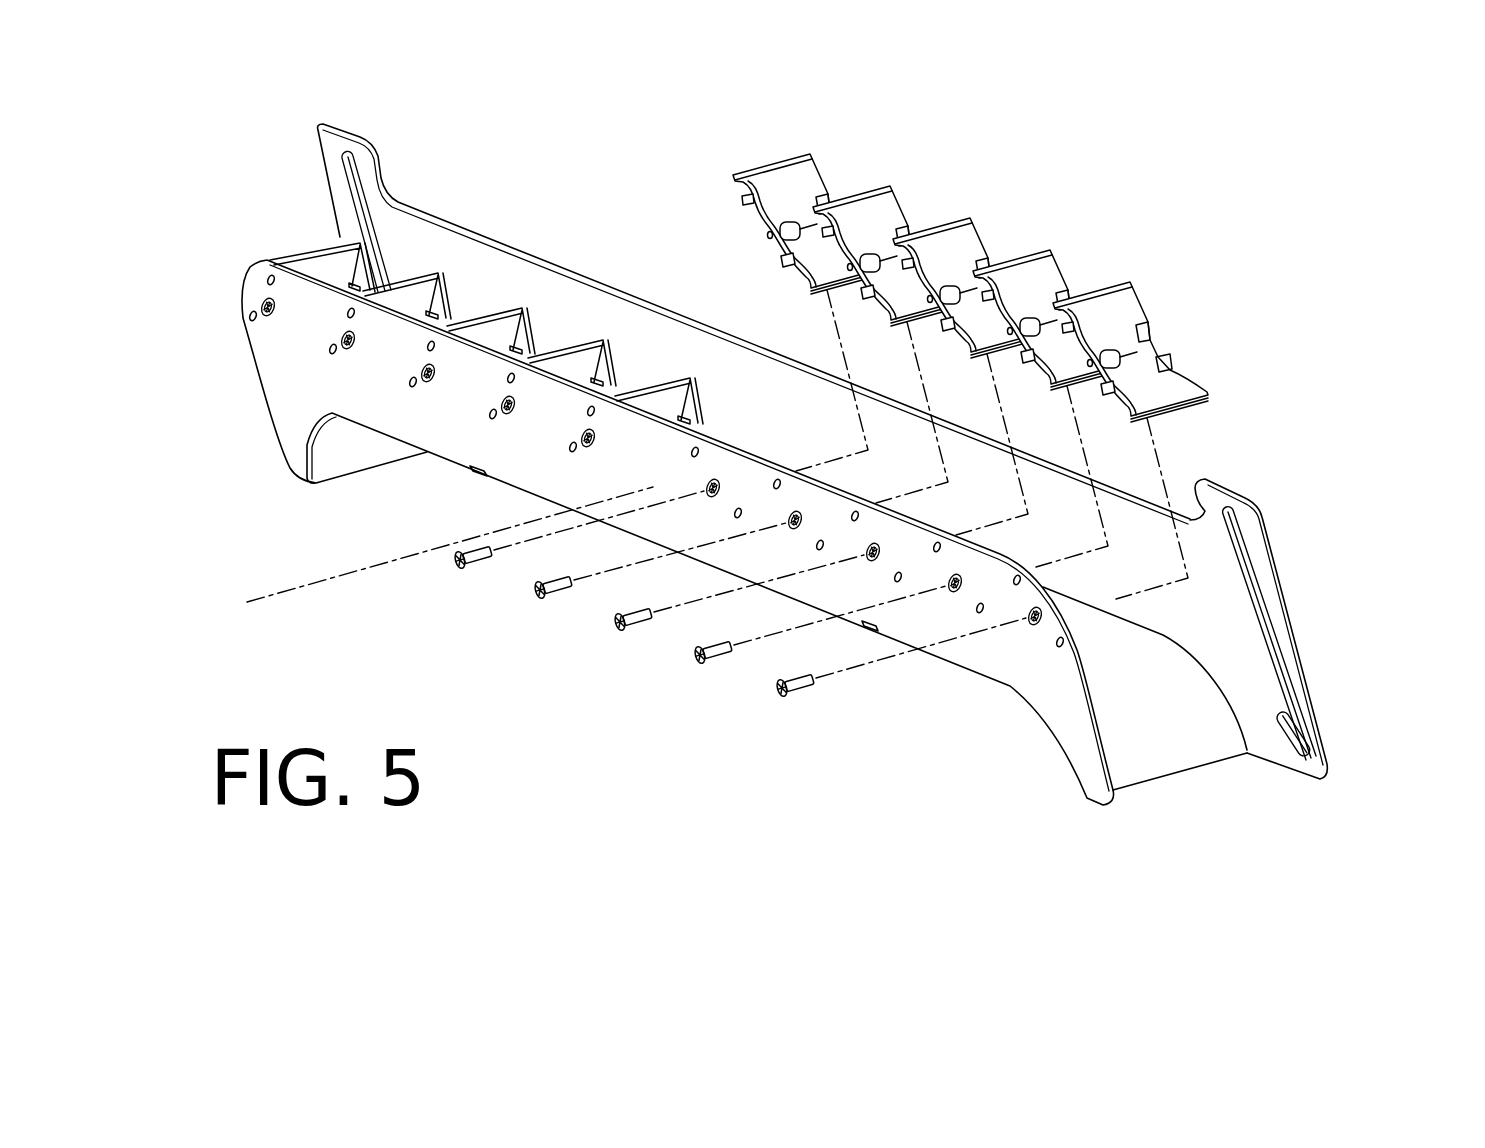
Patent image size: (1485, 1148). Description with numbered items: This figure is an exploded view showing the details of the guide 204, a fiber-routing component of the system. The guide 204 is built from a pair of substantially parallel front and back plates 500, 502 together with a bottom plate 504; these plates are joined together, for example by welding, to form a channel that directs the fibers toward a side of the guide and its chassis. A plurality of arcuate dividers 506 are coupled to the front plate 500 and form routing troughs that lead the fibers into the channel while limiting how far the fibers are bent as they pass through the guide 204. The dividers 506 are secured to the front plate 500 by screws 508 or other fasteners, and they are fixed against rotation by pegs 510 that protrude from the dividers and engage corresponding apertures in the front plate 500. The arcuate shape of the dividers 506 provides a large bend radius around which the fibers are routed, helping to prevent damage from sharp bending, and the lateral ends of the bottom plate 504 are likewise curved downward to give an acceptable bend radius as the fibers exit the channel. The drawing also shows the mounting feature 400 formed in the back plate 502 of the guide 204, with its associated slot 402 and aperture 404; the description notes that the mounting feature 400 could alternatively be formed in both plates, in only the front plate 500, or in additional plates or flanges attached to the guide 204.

The guide 204 is at (796, 510).
The mounting feature 400 is at (1333, 725).
The slot 402 is at (1257, 573).
The aperture 404 is at (1293, 742).
The front plate 500 is at (272, 365).
The back plate 502 is at (492, 234).
The bottom plate 504 is at (1152, 738).
The arcuate dividers 506 is at (1041, 276).
The screws 508 is at (812, 800).
The pegs 510 is at (744, 200).